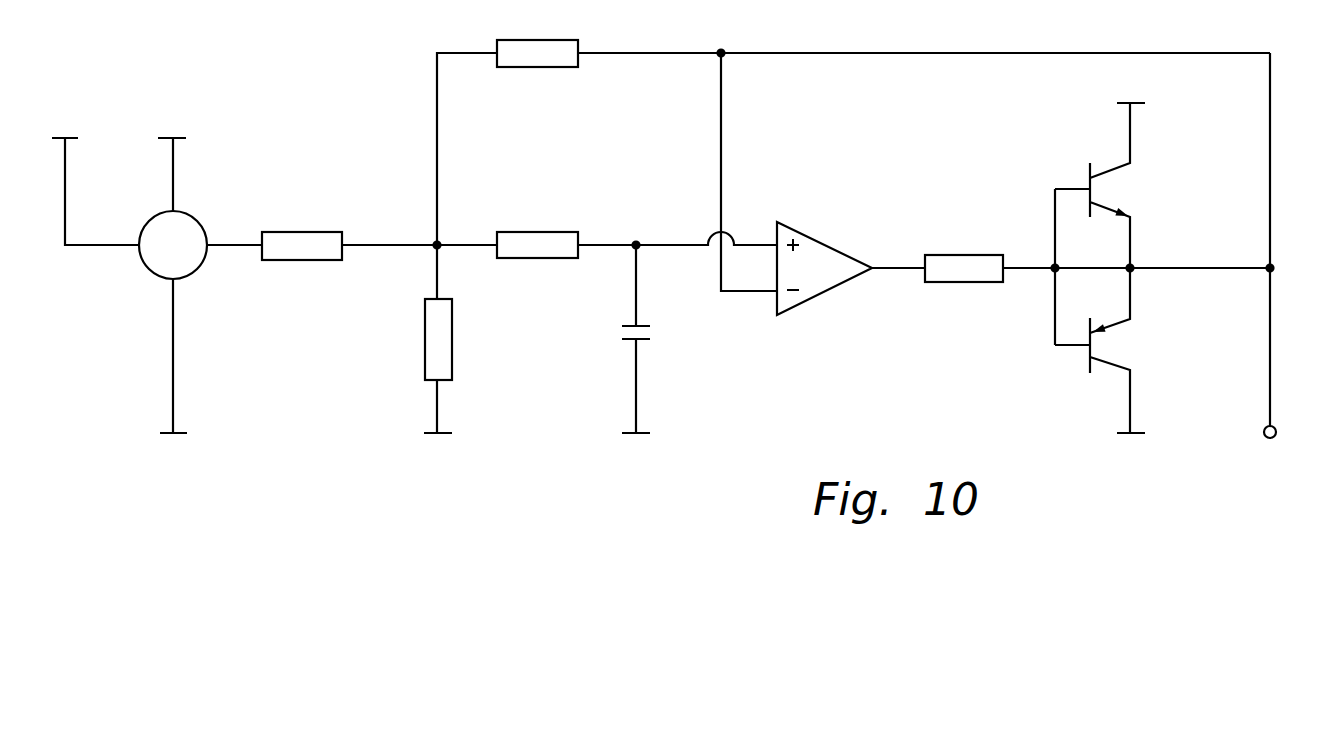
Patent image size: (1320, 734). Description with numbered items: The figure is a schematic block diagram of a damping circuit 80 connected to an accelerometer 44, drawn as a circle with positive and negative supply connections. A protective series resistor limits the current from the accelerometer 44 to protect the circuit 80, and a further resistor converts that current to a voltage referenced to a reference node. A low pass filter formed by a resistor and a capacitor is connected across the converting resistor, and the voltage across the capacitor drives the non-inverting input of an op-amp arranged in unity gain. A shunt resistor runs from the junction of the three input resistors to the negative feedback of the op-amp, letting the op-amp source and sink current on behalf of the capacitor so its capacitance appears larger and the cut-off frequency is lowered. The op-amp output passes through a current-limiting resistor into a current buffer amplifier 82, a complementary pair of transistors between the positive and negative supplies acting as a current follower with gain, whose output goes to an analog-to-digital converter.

The accelerometer 44 is at (148, 270).
The damping circuit 80 is at (322, 88).
The current buffer amplifier 82 is at (1055, 325).